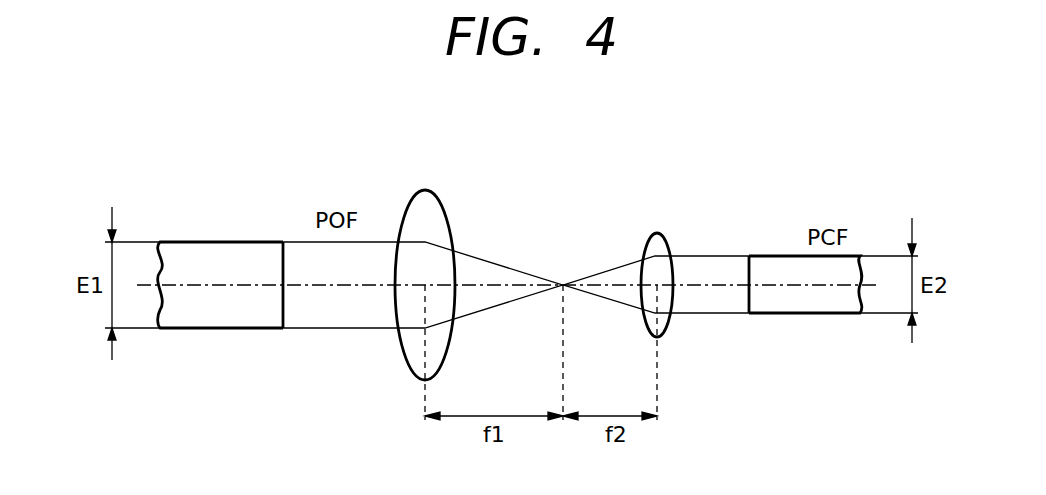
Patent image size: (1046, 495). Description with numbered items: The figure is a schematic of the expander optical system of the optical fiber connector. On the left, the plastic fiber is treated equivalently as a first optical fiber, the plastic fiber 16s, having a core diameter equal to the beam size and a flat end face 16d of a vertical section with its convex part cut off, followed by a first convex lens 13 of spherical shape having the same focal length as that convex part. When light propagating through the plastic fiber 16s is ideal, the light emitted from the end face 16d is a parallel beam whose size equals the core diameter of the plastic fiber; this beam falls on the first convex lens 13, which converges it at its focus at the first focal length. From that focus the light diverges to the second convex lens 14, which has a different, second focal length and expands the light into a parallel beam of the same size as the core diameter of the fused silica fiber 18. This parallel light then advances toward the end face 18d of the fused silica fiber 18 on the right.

The first convex lens 13 is at (430, 203).
The second convex lens 14 is at (657, 238).
The plastic fiber (POF) 16s is at (230, 255).
The end face 16d is at (283, 308).
The fused silica fiber (PCF) 18 is at (792, 267).
The end face 18d is at (747, 297).